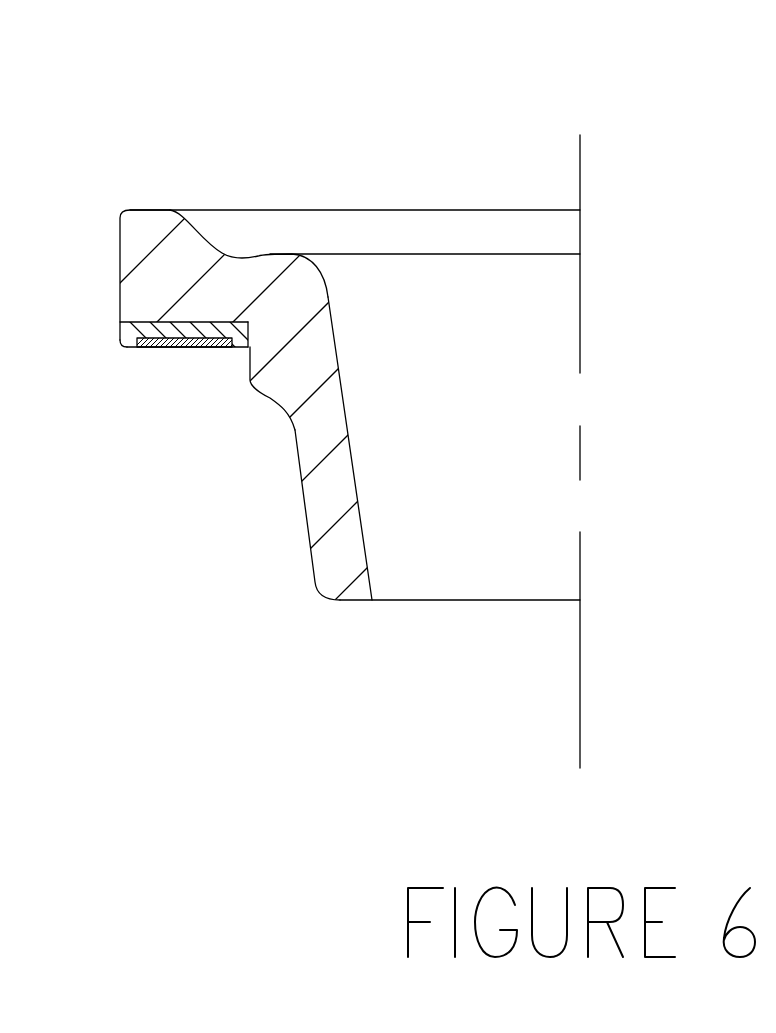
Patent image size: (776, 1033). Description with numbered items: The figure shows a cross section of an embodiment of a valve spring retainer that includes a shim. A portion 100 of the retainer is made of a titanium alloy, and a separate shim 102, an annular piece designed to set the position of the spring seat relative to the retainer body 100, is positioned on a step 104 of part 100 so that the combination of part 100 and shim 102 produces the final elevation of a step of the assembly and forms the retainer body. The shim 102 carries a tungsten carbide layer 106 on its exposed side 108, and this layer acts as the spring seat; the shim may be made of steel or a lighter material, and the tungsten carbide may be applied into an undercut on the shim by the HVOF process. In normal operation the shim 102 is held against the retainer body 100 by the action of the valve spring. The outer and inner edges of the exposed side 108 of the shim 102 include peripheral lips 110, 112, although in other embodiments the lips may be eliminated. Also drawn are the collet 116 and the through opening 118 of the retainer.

The retainer body 100 is at (283, 413).
The shim 102 is at (150, 332).
The step 104 is at (157, 310).
The tungsten carbide layer 106 is at (173, 348).
The exposed side 108 is at (130, 350).
The peripheral lip 110 is at (122, 350).
The peripheral lip 112 is at (242, 350).
The collet 116 is at (327, 538).
The through opening 118 is at (368, 558).